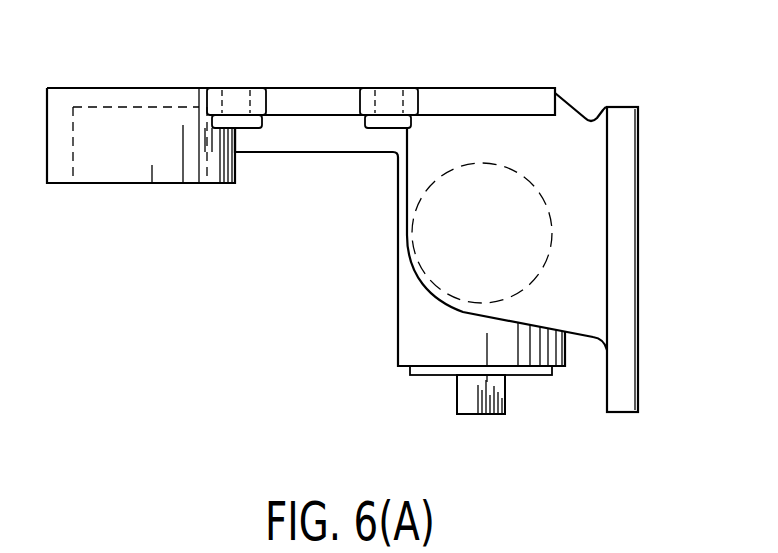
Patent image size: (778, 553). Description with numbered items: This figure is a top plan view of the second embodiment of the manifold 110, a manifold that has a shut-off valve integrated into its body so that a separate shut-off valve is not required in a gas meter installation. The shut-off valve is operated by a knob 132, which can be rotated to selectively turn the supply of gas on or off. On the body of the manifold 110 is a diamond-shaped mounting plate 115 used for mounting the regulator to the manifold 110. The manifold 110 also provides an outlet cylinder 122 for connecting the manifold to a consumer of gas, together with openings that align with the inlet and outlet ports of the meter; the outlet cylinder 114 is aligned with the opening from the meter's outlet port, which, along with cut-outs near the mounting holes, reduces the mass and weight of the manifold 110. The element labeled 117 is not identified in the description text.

The manifold 110 is at (357, 247).
The outlet cylinder 114 is at (62, 172).
The diamond-shaped mounting plate 115 is at (630, 383).
The mounting plate 117 is at (95, 88).
The outlet cylinder 122 is at (175, 170).
The knob 132 is at (492, 400).